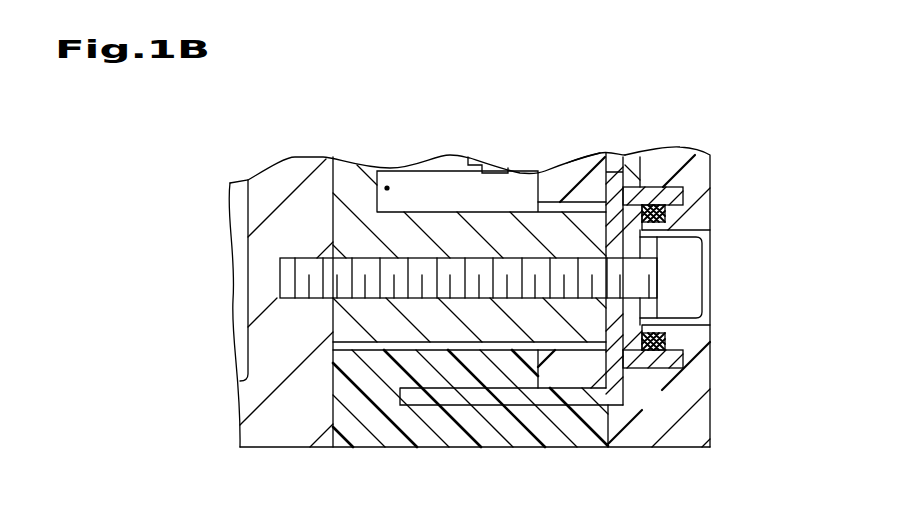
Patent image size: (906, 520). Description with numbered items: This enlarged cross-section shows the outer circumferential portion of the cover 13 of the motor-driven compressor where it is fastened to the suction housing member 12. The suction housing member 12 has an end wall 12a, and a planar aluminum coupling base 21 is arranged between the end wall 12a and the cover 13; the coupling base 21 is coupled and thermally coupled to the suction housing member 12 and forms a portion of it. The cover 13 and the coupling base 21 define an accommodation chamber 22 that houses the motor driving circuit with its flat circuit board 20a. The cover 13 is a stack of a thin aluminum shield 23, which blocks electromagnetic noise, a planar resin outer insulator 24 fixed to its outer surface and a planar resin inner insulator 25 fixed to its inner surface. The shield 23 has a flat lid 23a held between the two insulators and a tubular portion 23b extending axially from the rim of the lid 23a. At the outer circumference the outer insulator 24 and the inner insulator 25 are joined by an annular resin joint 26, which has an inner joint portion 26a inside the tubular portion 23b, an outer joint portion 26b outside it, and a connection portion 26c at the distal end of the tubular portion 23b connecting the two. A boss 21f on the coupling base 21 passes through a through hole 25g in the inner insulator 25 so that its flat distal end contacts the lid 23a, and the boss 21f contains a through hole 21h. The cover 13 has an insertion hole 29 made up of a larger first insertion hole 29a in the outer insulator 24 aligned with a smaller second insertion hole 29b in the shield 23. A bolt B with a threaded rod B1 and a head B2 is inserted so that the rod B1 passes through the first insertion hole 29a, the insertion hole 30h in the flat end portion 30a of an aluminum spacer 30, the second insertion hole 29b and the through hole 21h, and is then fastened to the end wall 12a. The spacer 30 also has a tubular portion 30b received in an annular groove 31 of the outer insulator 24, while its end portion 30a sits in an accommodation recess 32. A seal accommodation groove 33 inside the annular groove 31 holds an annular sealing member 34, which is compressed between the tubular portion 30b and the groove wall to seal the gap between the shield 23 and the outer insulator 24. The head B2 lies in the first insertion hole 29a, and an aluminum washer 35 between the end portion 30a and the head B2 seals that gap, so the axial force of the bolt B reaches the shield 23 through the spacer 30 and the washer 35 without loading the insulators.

The suction housing member 12 is at (263, 449).
The end wall 12a is at (262, 211).
The cover 13 is at (714, 153).
The circuit board 20a is at (470, 155).
The coupling base 21 is at (343, 218).
The boss 21f is at (432, 222).
The through hole 21h is at (497, 264).
The accommodation chamber 22 is at (387, 186).
The shield 23 is at (615, 405).
The lid 23a is at (636, 166).
The tubular portion 23b is at (431, 398).
The outer insulator 24 is at (708, 438).
The inner insulator 25 is at (550, 173).
The through hole 25g is at (577, 342).
The joint 26 is at (377, 449).
The inner joint portion 26a is at (445, 360).
The outer joint portion 26b is at (498, 440).
The connection portion 26c is at (353, 407).
The insertion hole 29 is at (724, 337).
The first insertion hole 29a is at (706, 346).
The second insertion hole 29b is at (700, 319).
The spacer 30 is at (653, 368).
The end portion 30a is at (620, 314).
The tubular portion 30b is at (660, 178).
The insertion hole 30h is at (603, 258).
The annular groove 31 is at (684, 194).
The accommodation recess 32 is at (600, 155).
The seal accommodation groove 33 is at (667, 214).
The sealing member 34 is at (680, 380).
The washer 35 is at (648, 253).
The bolt B is at (542, 285).
The rod B1 is at (478, 292).
The head B2 is at (685, 279).